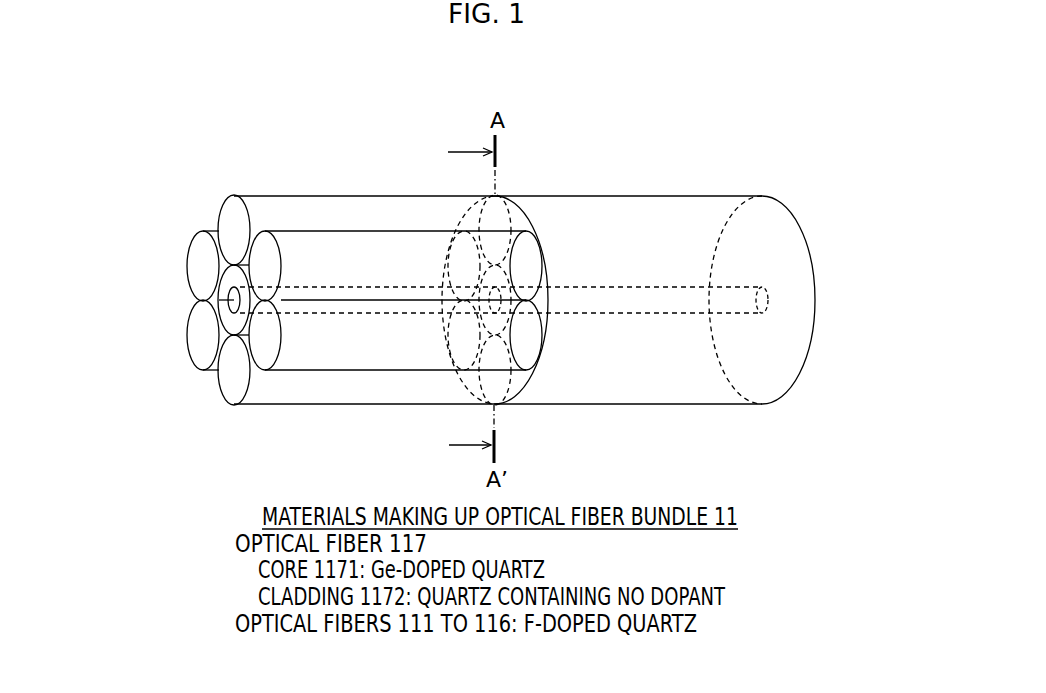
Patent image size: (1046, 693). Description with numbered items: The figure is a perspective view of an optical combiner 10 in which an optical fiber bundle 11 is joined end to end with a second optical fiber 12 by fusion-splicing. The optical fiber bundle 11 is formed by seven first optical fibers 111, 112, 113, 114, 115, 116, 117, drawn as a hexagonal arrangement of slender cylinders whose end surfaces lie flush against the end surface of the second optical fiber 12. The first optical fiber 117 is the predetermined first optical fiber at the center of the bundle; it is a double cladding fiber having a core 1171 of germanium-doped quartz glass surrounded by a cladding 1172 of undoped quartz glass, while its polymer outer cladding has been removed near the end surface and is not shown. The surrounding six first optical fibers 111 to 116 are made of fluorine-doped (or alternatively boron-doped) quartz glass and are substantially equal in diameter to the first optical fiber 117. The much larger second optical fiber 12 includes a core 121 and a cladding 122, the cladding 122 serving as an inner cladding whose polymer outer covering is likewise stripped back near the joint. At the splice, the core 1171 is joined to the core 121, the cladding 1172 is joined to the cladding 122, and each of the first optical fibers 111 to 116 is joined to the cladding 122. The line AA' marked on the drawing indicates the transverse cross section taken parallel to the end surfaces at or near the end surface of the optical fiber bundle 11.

The optical combiner 10 is at (724, 108).
The optical fiber bundle 11 is at (349, 163).
The second optical fiber 12 is at (612, 164).
The first optical fiber 111 is at (227, 206).
The first optical fiber 112 is at (292, 233).
The first optical fiber 113 is at (292, 371).
The first optical fiber 114 is at (227, 397).
The first optical fiber 115 is at (198, 359).
The first optical fiber 116 is at (198, 242).
The first optical fiber 117 is at (118, 257).
The core 1171 is at (229, 304).
The cladding 1172 is at (230, 281).
The core 121 is at (768, 306).
The cladding 122 is at (806, 258).